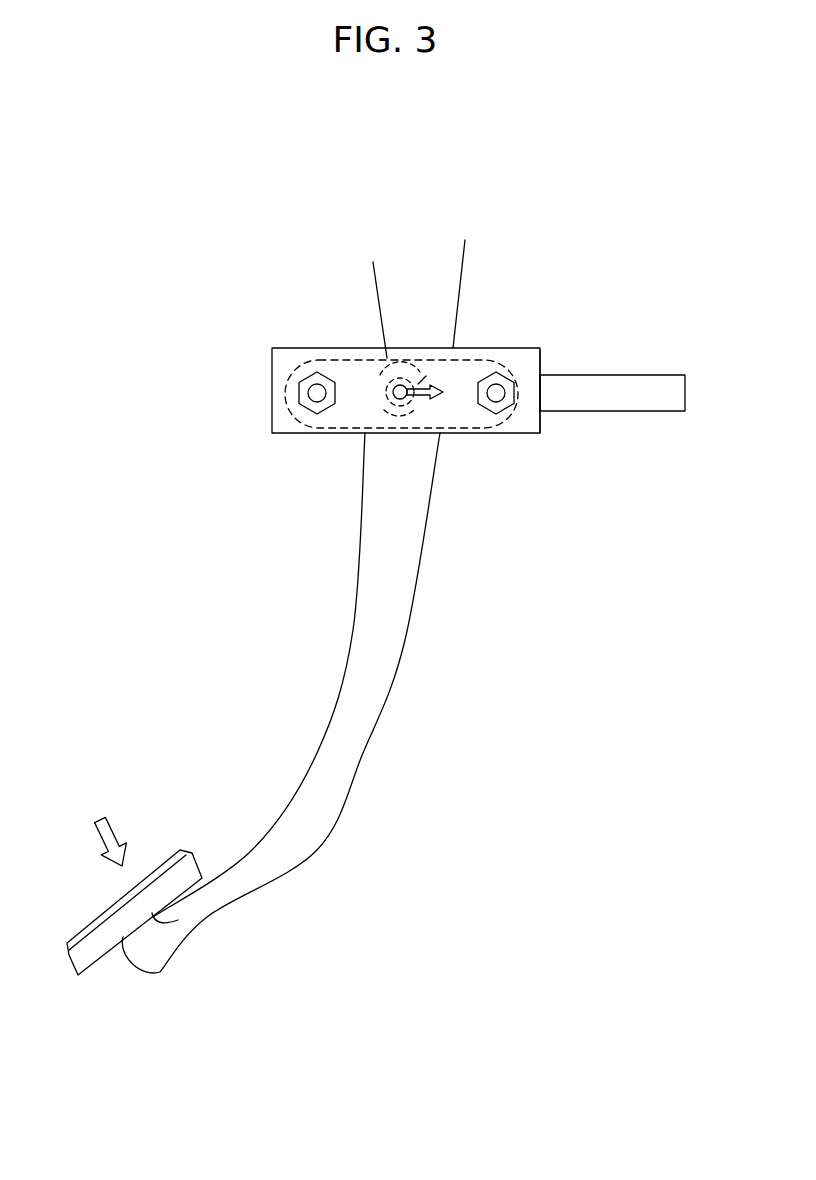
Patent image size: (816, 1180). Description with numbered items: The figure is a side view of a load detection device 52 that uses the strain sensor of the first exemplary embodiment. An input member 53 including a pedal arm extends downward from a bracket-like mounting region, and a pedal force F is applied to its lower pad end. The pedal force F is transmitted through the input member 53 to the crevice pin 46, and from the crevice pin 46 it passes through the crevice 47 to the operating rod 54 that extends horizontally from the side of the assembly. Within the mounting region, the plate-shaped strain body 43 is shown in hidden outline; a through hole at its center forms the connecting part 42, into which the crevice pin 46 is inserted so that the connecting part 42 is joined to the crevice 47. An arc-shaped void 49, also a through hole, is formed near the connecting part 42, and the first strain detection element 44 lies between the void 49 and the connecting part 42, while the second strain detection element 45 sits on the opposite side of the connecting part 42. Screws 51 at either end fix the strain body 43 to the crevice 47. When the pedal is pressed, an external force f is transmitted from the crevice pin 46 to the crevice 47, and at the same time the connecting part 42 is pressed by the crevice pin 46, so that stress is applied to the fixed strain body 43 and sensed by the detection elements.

The connecting part 42 is at (392, 384).
The strain body 43 is at (373, 358).
The first strain detection element 44 is at (416, 383).
The second strain detection element 45 is at (386, 388).
The crevice pin 46 is at (334, 328).
The crevice 47 is at (523, 410).
The void 49 is at (403, 423).
The screws 51 is at (317, 393).
The load detection device 52 is at (222, 202).
The input member 53 is at (333, 763).
The operating rod 54 is at (598, 398).
The external force f is at (424, 390).
The pedal force F is at (122, 841).